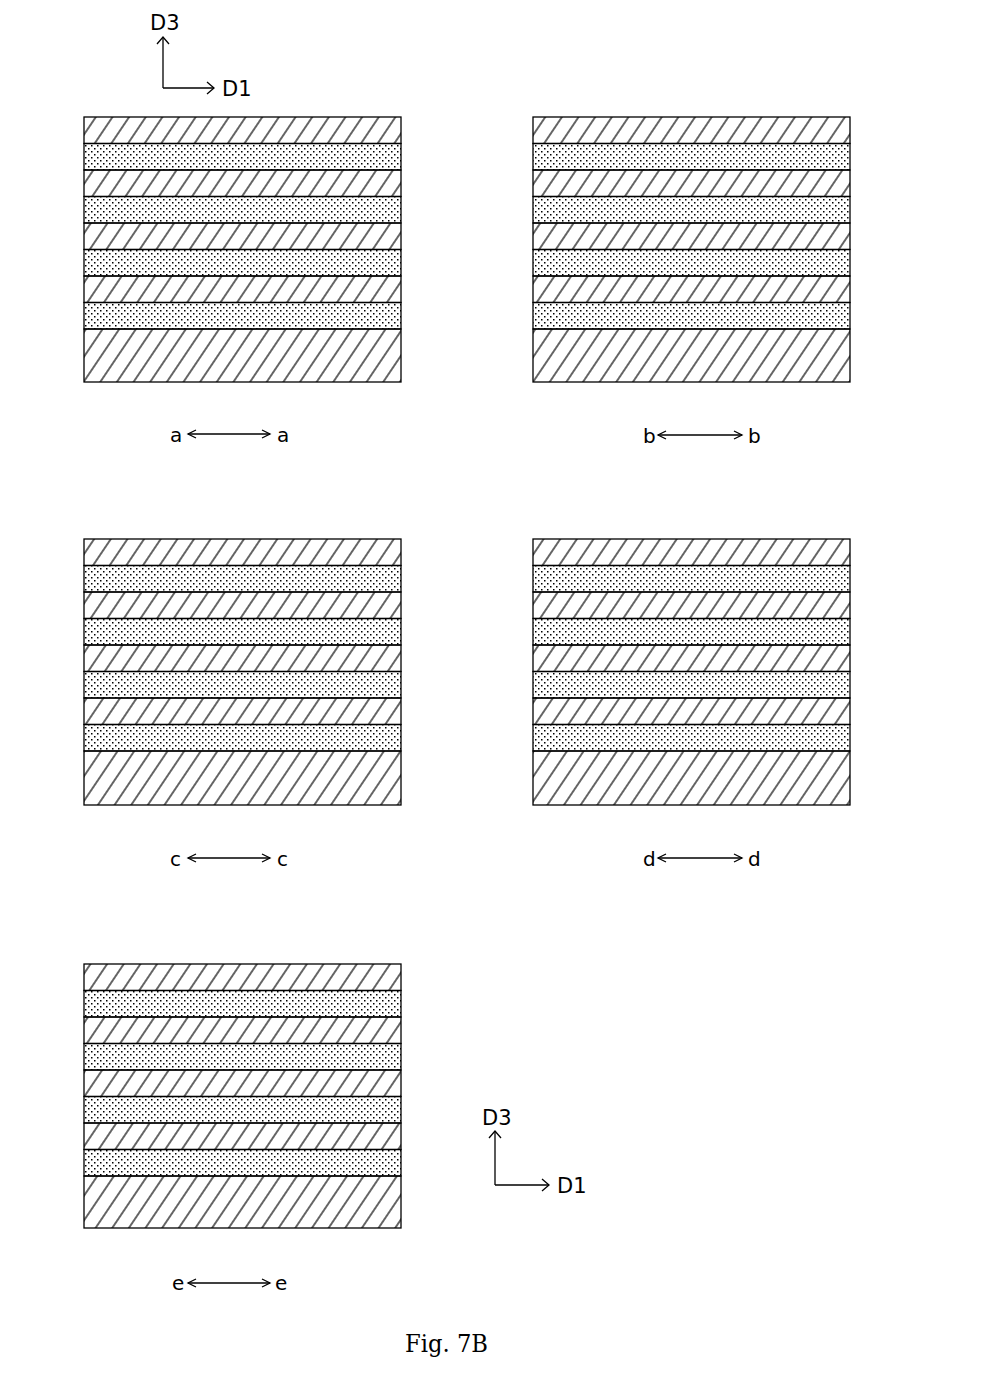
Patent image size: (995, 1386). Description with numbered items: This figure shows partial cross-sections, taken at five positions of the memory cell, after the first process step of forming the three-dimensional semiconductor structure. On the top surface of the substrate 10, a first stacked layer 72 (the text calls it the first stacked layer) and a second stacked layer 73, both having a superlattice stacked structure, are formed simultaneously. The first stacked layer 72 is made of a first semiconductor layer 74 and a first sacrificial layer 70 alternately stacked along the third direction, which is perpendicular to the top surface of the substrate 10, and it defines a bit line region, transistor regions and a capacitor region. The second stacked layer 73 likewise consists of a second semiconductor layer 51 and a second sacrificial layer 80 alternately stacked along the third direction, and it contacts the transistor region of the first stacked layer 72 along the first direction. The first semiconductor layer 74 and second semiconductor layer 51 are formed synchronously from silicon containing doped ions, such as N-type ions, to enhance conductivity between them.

The substrate 10 is at (345, 375).
The first multilayer stack 72 is at (82, 118).
The first semiconductor layer 74 is at (401, 239).
The first sacrificial layer 70 is at (401, 316).
The second stacked layer 73 is at (82, 965).
The second semiconductor layer 51 is at (401, 1028).
The second sacrificial layer 80 is at (401, 1163).